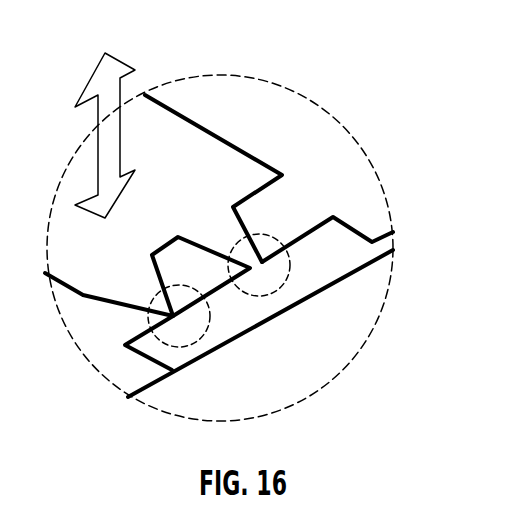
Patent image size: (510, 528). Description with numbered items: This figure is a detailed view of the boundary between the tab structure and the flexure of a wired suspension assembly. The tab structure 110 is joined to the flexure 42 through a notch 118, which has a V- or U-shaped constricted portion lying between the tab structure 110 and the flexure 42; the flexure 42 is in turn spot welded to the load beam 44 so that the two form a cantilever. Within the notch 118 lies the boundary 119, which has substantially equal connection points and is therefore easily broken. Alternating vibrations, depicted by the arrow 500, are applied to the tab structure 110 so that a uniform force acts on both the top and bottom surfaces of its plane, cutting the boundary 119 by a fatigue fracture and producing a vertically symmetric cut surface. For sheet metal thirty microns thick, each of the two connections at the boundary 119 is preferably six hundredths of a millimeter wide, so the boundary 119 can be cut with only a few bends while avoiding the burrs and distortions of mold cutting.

The arrow 500 is at (105, 119).
The tab structure 110 is at (197, 173).
The notch 118 is at (340, 122).
The flexure 42 is at (358, 230).
The load beam 44 is at (340, 317).
The boundary 119 is at (193, 343).